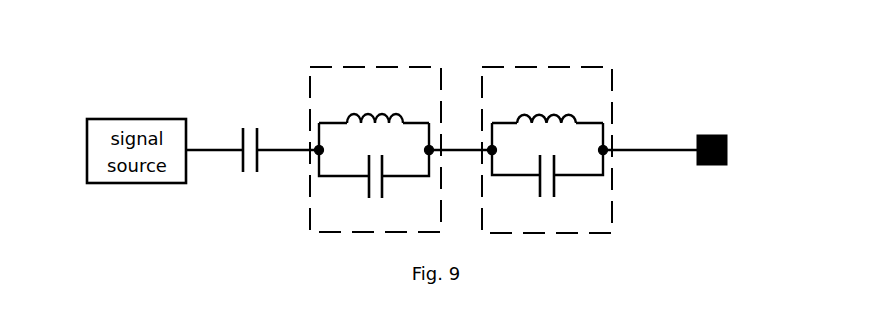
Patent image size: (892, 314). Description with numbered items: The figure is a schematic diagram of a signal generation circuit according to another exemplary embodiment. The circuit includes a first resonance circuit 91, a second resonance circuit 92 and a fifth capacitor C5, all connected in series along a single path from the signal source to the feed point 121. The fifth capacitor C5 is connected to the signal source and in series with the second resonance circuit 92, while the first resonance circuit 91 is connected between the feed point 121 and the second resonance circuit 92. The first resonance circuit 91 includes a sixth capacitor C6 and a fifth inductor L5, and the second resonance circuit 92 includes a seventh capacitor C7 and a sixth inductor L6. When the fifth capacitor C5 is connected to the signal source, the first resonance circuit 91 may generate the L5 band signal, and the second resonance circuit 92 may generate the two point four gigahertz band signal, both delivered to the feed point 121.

The first resonance circuit 91 is at (567, 129).
The second resonance circuit 92 is at (395, 129).
The feed point 121 is at (725, 135).
The fifth capacitor C5 is at (250, 135).
The sixth inductor L6 is at (375, 104).
The seventh capacitor C7 is at (375, 193).
The fifth inductor L5 is at (546, 104).
The sixth capacitor C6 is at (548, 193).